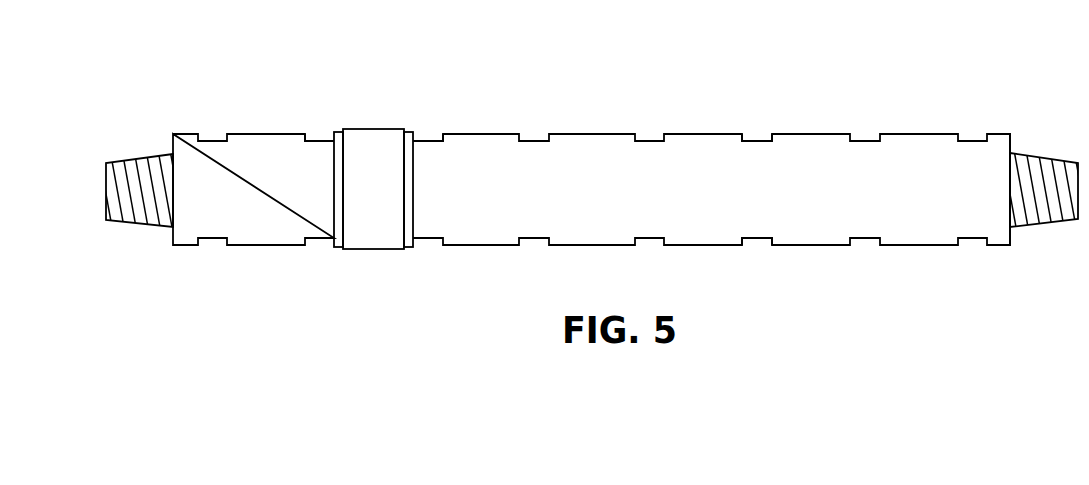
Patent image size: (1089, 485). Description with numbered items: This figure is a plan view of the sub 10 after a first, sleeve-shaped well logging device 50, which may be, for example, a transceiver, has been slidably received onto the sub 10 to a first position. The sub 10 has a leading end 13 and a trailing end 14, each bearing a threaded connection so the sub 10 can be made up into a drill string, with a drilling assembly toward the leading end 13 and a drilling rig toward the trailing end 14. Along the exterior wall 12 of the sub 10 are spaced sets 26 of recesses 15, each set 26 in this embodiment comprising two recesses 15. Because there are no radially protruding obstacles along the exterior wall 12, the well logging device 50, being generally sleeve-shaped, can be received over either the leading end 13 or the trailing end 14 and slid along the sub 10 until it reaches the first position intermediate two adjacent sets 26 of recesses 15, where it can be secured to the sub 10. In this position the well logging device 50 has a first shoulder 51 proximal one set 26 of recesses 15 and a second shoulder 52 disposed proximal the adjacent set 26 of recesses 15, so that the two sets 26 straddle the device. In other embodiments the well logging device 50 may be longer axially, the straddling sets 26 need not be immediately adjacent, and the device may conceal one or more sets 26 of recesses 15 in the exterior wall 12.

The sub 10 is at (1012, 132).
The exterior wall 12 is at (588, 152).
The leading end 13 is at (173, 133).
The trailing end 14 is at (1010, 246).
The recesses 15 is at (757, 138).
The sets of recesses 26 is at (322, 138).
The well logging device 50 is at (385, 128).
The first shoulder 51 is at (340, 132).
The second shoulder 52 is at (407, 248).